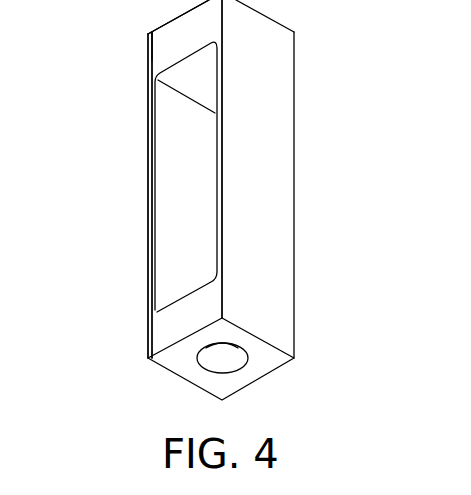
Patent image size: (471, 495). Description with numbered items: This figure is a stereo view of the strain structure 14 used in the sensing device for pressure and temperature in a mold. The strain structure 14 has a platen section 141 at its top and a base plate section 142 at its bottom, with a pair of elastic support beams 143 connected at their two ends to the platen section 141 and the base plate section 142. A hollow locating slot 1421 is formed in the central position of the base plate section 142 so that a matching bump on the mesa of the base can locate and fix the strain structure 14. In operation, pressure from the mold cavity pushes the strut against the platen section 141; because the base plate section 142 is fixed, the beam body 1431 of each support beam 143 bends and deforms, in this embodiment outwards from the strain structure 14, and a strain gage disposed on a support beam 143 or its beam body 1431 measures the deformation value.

The strain structure 14 is at (130, 187).
The platen section 141 is at (176, 32).
The base plate section 142 is at (188, 333).
The locating slot 1421 is at (223, 360).
The support beam 143 is at (148, 210).
The beam body 1431 is at (166, 180).